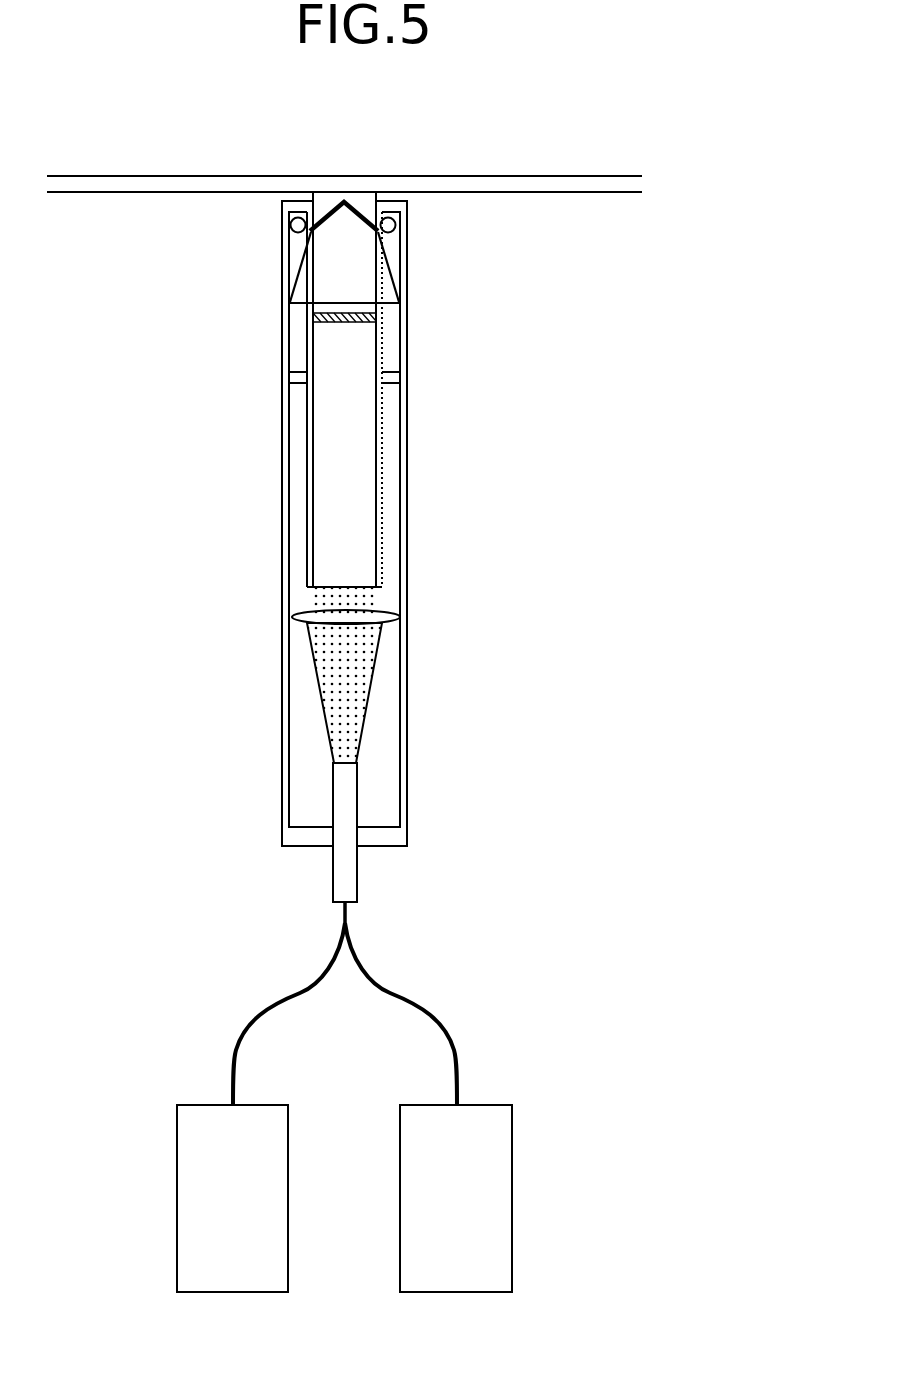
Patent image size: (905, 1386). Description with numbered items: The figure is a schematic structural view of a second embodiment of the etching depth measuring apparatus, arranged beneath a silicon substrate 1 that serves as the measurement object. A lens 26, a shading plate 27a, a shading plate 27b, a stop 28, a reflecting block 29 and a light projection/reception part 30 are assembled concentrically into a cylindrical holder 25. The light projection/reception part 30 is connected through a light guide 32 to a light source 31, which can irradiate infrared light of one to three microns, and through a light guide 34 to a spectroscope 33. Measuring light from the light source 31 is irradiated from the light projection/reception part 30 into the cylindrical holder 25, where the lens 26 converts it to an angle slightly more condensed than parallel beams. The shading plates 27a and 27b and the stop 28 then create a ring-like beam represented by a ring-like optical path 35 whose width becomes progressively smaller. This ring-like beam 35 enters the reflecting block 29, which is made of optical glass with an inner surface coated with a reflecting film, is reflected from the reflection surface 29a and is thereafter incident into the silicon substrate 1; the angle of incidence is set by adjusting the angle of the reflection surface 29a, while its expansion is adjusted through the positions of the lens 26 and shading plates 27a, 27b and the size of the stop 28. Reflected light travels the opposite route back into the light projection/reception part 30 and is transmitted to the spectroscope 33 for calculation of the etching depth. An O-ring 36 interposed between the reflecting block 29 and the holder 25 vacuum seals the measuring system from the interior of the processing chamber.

The silicon substrate 1 is at (567, 175).
The cylindrical holder 25 is at (408, 535).
The lens 26 is at (292, 616).
The shading plate 27a is at (345, 587).
The shading plate 27b is at (345, 323).
The stop 28 is at (395, 378).
The reflecting block 29 is at (337, 250).
The reflection surface 29a is at (393, 266).
The light projection/reception part 30 is at (333, 893).
The light source 31 is at (512, 1195).
The light guide 32 is at (437, 1017).
The spectroscope 33 is at (177, 1195).
The light guide 34 is at (253, 1018).
The ring-like optical path 35 is at (383, 455).
The O-ring 36 is at (396, 226).